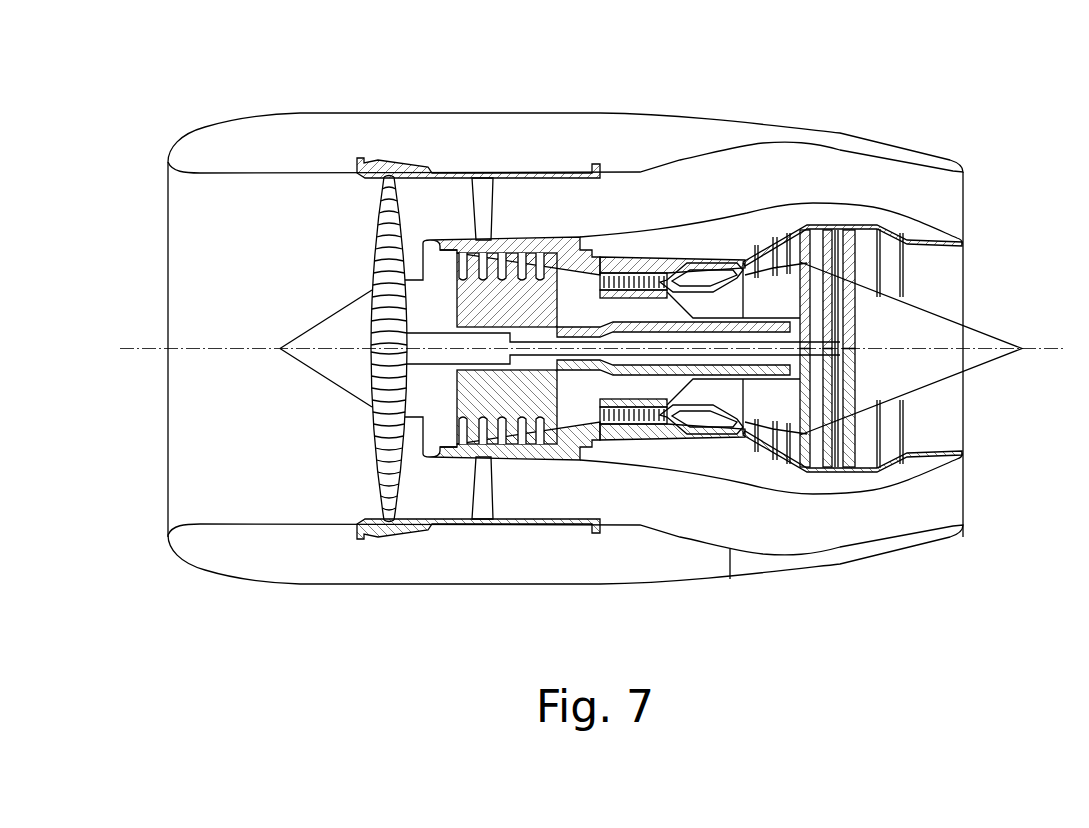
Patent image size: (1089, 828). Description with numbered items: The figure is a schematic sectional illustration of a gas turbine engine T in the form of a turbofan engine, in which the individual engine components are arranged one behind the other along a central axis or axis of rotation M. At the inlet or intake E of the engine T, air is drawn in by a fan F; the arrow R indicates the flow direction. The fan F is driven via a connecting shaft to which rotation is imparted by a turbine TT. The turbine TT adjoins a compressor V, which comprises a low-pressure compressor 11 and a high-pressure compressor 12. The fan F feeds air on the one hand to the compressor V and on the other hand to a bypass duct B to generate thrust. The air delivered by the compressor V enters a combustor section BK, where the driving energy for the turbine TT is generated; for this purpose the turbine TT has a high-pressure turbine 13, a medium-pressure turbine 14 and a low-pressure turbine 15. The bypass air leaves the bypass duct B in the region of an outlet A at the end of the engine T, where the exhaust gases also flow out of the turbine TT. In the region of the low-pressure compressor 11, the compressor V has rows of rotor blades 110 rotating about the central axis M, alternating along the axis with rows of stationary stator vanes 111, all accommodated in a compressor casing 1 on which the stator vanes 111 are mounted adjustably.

The engine T is at (935, 78).
The inlet E is at (202, 459).
The outlet A is at (947, 263).
The flow direction R is at (297, 225).
The fan F is at (377, 207).
The casing 1 is at (452, 234).
The rotor blades 110 is at (467, 463).
The stator vanes 111 is at (543, 248).
The low-pressure compressor 11 is at (500, 250).
The high-pressure compressor 12 is at (613, 252).
The high-pressure turbine 13 is at (748, 260).
The medium-pressure turbine 14 is at (780, 235).
The low-pressure turbine 15 is at (837, 227).
The turbine TT is at (820, 467).
The central axis M is at (1057, 351).
The bypass duct B is at (695, 190).
The combustor section BK is at (696, 477).
The compressor V is at (635, 432).